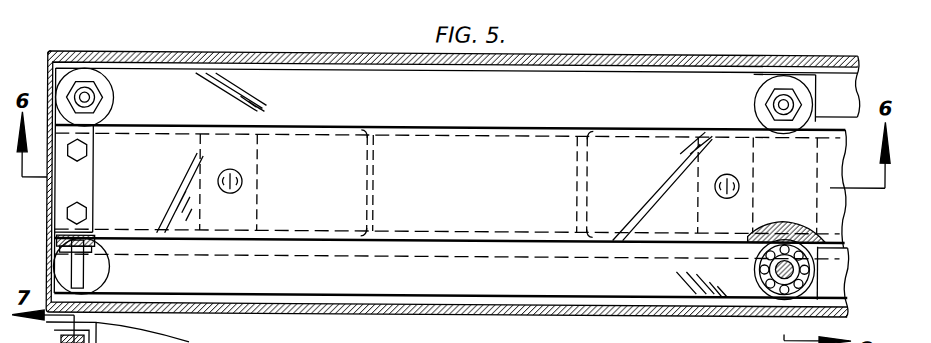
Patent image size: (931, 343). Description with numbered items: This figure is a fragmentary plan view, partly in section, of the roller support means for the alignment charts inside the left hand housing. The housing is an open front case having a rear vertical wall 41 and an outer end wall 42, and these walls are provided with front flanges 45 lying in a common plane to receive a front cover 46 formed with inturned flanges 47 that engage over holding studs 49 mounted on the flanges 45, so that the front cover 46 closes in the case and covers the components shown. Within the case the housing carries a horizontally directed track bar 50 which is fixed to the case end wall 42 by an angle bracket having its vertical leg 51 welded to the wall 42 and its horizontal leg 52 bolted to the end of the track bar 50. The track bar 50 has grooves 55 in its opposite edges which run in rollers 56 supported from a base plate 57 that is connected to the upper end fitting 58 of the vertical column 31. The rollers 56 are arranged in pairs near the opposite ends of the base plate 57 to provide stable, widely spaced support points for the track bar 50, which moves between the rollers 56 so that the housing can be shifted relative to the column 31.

The vertical column 31 is at (362, 168).
The rear vertical wall 41 is at (374, 53).
The outer end wall 42 is at (48, 60).
The front flanges 45 is at (97, 250).
The front cover 46 is at (400, 310).
The inturned flanges 47 is at (107, 270).
The holding studs 49 is at (52, 273).
The track bar 50 is at (302, 134).
The vertical leg 51 is at (57, 170).
The horizontal leg 52 is at (82, 179).
The grooves 55 is at (621, 126).
The rollers 56 is at (113, 97).
The base plate 57 is at (556, 286).
The upper end fitting 58 is at (188, 150).